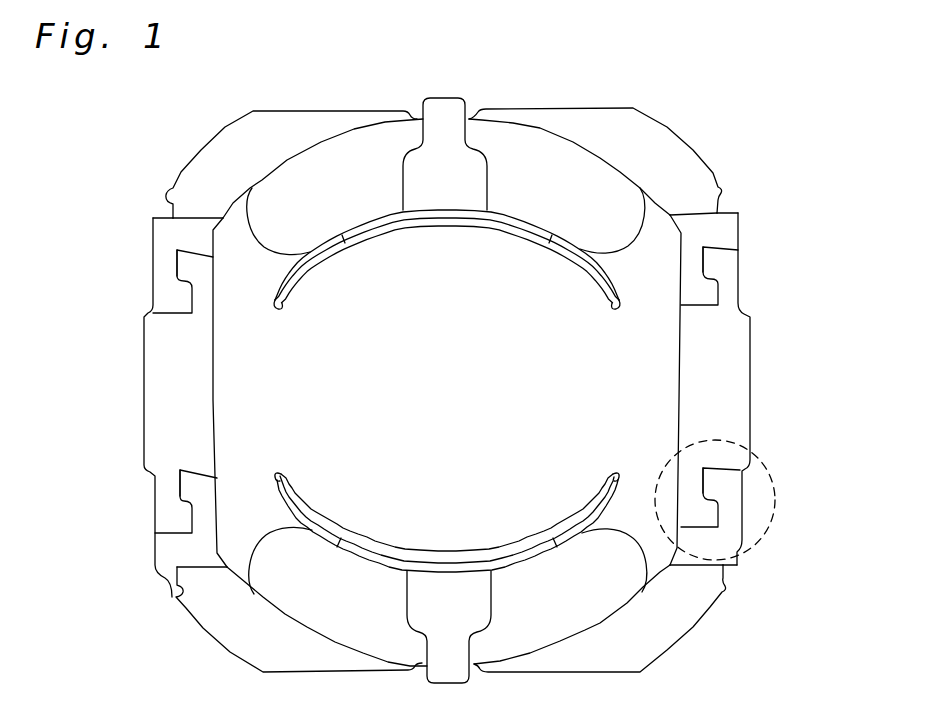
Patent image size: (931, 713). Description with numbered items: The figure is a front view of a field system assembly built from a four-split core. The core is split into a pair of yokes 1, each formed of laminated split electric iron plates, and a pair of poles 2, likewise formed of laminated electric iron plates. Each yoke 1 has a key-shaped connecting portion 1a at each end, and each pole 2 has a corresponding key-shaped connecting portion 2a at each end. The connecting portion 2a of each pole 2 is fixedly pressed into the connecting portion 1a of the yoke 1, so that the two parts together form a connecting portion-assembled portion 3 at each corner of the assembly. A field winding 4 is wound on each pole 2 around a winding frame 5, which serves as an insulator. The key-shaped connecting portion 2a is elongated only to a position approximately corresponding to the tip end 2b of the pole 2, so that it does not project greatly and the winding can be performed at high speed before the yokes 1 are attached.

The yoke 1 is at (184, 390).
The key-shaped connecting portion 1a is at (203, 287).
The pole 2 is at (668, 120).
The key-shaped connecting portion 2a is at (163, 282).
The tip end 2b is at (282, 308).
The connecting portion-assembled portion 3 is at (140, 178).
The field winding 4 is at (353, 152).
The winding frame 5 is at (447, 175).